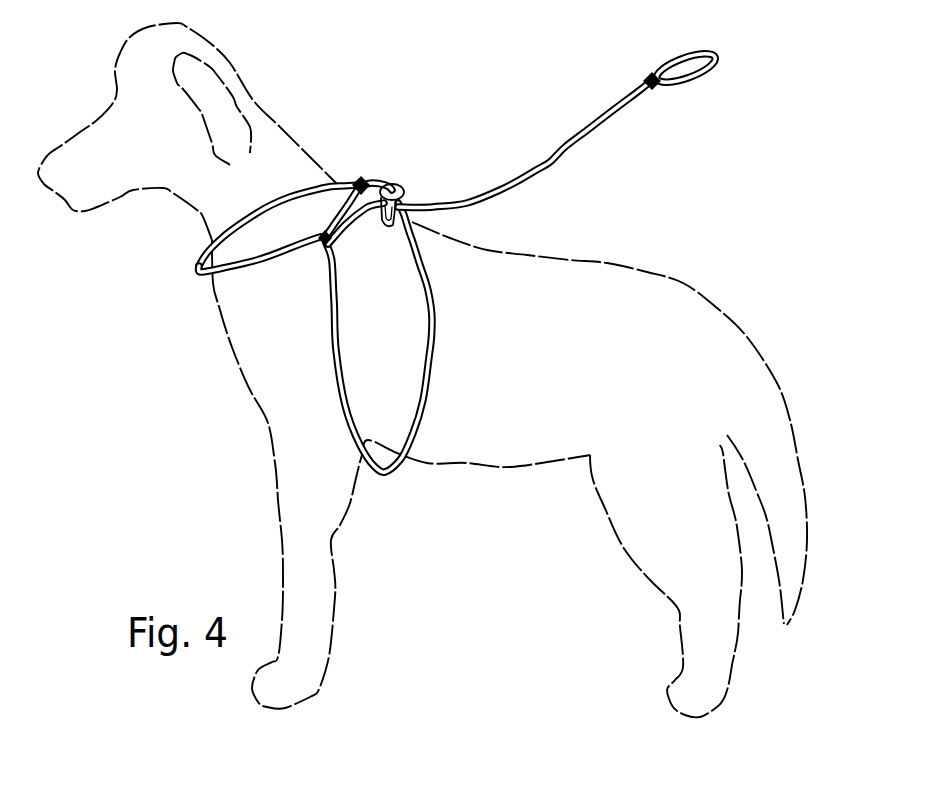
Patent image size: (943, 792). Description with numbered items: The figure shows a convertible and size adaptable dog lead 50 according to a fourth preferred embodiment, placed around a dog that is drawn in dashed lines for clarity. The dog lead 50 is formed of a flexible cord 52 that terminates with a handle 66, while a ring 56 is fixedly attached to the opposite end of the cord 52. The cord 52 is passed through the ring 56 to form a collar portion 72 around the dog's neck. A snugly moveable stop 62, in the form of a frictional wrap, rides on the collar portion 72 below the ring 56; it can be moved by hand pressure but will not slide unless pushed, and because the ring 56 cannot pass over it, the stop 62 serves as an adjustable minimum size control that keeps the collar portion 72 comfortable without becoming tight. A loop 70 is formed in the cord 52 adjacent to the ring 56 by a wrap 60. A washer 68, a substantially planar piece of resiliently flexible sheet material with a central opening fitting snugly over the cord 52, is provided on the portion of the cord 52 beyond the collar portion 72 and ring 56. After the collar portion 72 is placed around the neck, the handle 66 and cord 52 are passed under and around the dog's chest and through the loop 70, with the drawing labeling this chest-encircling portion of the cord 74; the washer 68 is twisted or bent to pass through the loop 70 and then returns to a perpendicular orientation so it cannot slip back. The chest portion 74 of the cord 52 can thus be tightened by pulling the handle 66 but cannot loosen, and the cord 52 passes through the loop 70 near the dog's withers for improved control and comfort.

The convertible and size adaptable dog lead 50 is at (494, 77).
The flexible cord 52 is at (573, 152).
The ring 56 is at (381, 180).
The wrap 60 is at (325, 245).
The snugly moveable stop 62 is at (357, 182).
The handle 66 is at (688, 87).
The washer 68 is at (398, 194).
The loop 70 is at (324, 187).
The collar portion 72 is at (198, 275).
The chest loop 74 is at (400, 453).